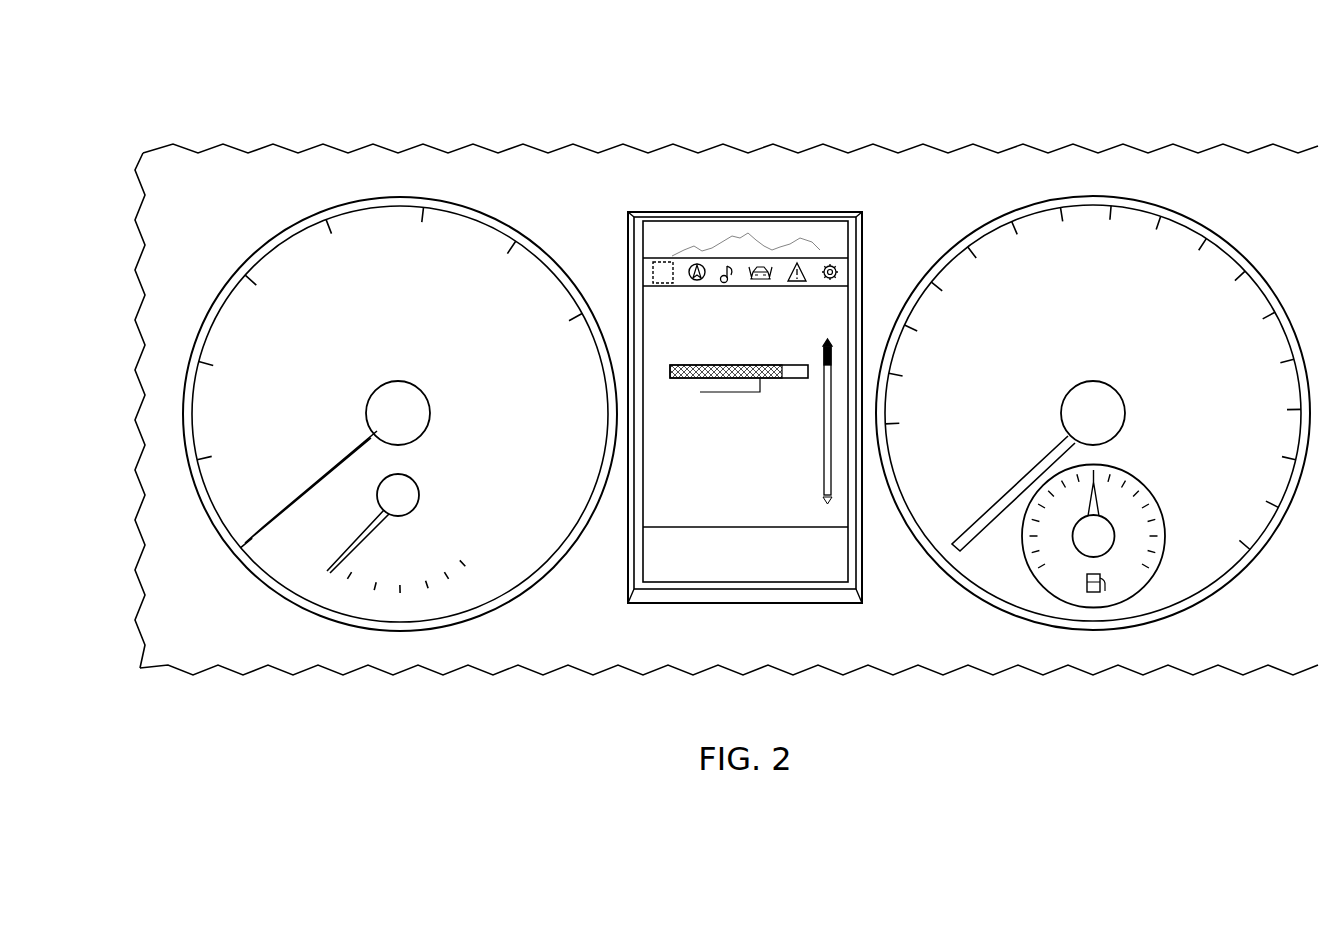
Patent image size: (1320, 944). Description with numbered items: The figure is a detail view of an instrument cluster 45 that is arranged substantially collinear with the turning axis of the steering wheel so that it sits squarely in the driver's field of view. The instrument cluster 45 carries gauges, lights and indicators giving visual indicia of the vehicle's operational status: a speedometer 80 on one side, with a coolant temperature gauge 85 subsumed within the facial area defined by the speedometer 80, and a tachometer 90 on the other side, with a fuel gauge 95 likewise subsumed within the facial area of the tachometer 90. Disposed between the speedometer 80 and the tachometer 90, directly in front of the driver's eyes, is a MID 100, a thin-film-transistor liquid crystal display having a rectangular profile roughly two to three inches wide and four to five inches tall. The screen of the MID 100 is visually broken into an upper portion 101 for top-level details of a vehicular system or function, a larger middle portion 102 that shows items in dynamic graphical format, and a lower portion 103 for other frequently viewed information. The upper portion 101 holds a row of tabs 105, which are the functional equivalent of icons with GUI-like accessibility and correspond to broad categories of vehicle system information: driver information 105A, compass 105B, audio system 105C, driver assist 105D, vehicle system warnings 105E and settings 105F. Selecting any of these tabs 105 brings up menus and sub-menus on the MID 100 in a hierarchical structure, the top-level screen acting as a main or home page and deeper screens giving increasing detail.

The instrument cluster 45 is at (207, 101).
The speedometer 80 is at (503, 222).
The coolant temperature gauge 85 is at (413, 567).
The tachometer 90 is at (1172, 212).
The fuel gauge 95 is at (1068, 587).
The MID 100 is at (668, 603).
The upper portion 101 is at (865, 212).
The middle portion 102 is at (865, 523).
The lower portion 103 is at (865, 528).
The tabs 105 is at (628, 240).
The driver information tab 105A is at (653, 270).
The compass tab 105B is at (695, 258).
The audio system tab 105C is at (725, 262).
The driver assist tab 105D is at (757, 263).
The vehicle system warnings tab 105E is at (793, 263).
The settings tab 105F is at (827, 262).